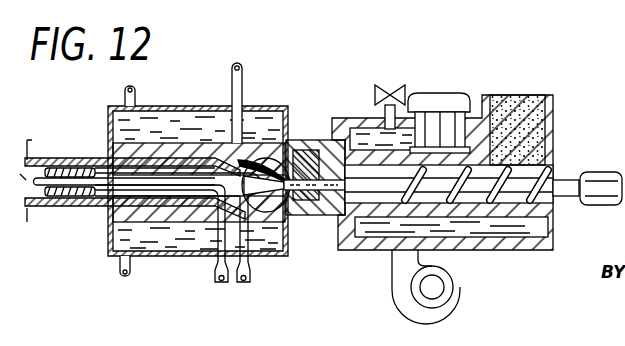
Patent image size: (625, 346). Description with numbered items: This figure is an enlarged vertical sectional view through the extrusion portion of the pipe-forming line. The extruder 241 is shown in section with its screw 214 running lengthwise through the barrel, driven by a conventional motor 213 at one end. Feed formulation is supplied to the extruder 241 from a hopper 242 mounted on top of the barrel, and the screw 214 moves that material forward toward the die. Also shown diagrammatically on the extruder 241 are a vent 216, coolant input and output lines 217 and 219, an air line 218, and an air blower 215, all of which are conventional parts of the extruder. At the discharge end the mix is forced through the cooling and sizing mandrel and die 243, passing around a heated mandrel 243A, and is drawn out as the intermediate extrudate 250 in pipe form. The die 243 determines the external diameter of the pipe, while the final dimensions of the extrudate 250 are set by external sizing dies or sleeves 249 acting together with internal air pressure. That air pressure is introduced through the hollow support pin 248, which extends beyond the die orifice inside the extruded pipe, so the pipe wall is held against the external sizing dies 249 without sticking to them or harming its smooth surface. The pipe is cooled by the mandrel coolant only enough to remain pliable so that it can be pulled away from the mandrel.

The motor 213 is at (603, 178).
The screw 214 is at (515, 188).
The air blower 215 is at (447, 300).
The vent 216 is at (440, 94).
The coolant input line 217 is at (245, 76).
The air line 218 is at (246, 284).
The coolant output line 219 is at (219, 284).
The extruder 241 is at (362, 116).
The hopper 242 is at (522, 94).
The mandrel and die assembly 243 is at (190, 252).
The heated mandrel 243A is at (183, 218).
The hollow support pin 248 is at (48, 194).
The external sizing dies or sleeves 249 is at (30, 210).
The intermediate extrudate 250 is at (69, 158).